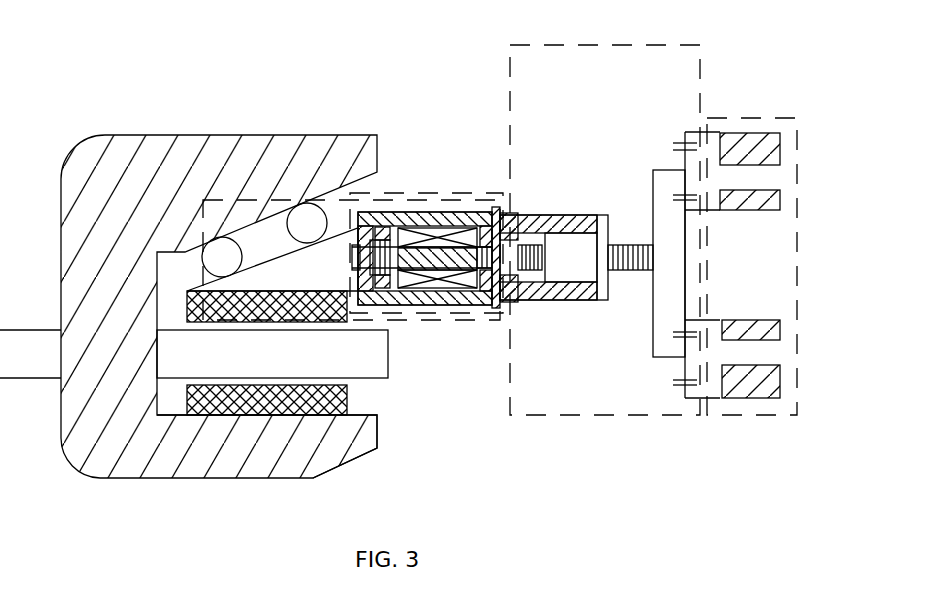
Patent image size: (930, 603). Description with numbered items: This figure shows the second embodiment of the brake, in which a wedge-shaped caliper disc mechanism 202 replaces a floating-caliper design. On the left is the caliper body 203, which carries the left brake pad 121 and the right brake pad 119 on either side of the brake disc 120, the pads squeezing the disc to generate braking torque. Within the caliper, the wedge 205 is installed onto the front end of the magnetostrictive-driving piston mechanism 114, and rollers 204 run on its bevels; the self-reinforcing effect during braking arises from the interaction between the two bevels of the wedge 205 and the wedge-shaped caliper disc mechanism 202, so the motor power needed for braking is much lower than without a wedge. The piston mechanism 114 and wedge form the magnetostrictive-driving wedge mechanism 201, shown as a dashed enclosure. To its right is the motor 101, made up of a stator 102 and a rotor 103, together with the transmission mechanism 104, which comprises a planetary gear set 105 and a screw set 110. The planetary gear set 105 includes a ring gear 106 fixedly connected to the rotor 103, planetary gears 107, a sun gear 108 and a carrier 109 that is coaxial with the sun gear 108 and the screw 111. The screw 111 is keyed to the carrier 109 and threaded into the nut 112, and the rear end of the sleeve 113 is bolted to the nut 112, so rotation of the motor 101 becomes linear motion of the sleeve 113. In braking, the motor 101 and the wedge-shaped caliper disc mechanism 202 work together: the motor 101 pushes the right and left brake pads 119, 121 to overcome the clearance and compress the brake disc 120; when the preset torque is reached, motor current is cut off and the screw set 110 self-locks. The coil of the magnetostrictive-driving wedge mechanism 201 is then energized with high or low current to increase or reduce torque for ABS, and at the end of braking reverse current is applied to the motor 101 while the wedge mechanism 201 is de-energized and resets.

The motor 101 is at (727, 115).
The stator 102 is at (778, 192).
The rotor 103 is at (750, 163).
The transmission mechanism 104 is at (703, 63).
The planetary gear set 105 is at (690, 353).
The ring gear 106 is at (682, 142).
The planetary gear 107 is at (680, 165).
The sun gear 108 is at (657, 177).
The carrier 109 is at (650, 200).
The screw set 110 is at (565, 213).
The screw 111 is at (635, 270).
The nut 112 is at (553, 268).
The sleeve 113 is at (510, 297).
The magnetostrictive-driving piston mechanism 114 is at (448, 325).
The right brake pad 119 is at (335, 320).
The brake disc 120 is at (337, 367).
The left brake pad 121 is at (338, 423).
The magnetostrictive-driving wedge mechanism 201 is at (387, 317).
The wedge-shaped caliper disc mechanism 202 is at (200, 132).
The caliper body 203 is at (258, 180).
The roller 204 is at (312, 205).
The wedge 205 is at (337, 247).